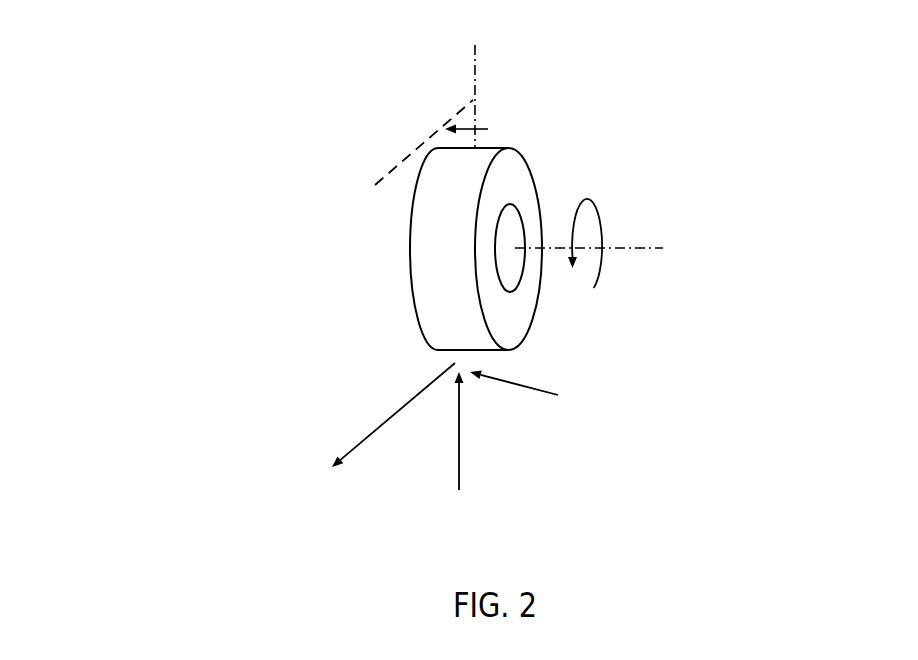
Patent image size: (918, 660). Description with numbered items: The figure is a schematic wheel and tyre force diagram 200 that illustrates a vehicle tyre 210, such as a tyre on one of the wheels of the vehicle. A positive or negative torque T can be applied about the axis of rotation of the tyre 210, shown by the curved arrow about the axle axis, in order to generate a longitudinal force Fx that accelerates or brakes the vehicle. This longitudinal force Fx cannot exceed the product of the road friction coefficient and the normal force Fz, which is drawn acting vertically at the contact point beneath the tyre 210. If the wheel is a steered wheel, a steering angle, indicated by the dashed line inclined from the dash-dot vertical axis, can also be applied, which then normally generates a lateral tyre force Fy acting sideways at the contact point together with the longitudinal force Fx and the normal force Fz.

The wheel force and steering diagram 200 is at (144, 68).
The vehicle tyre 210 is at (430, 248).
The torque T is at (580, 250).
The longitudinal force Fx is at (368, 425).
The lateral tyre force Fy is at (536, 380).
The normal force Fz is at (478, 441).